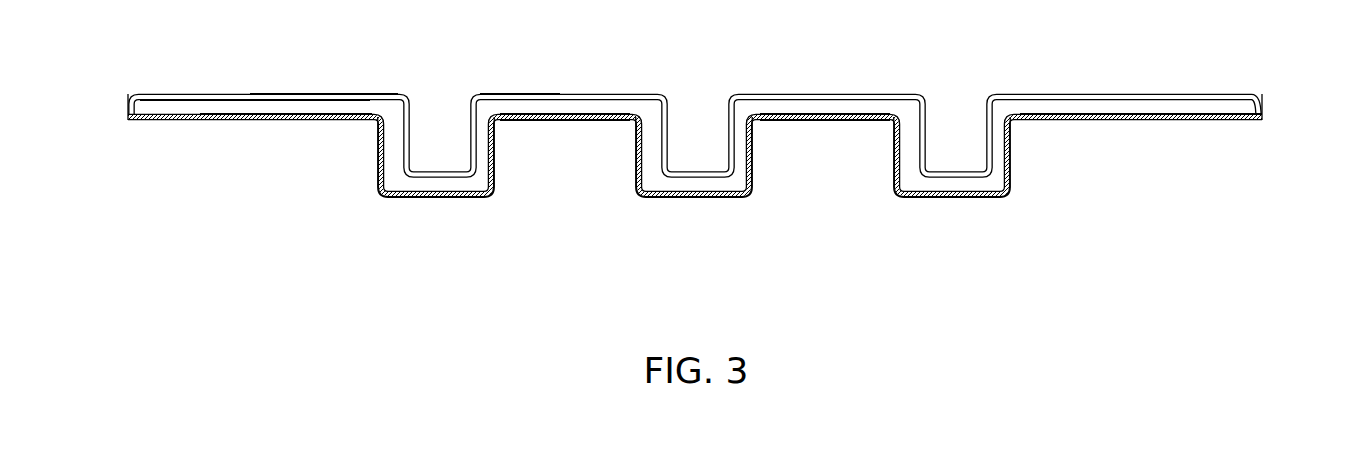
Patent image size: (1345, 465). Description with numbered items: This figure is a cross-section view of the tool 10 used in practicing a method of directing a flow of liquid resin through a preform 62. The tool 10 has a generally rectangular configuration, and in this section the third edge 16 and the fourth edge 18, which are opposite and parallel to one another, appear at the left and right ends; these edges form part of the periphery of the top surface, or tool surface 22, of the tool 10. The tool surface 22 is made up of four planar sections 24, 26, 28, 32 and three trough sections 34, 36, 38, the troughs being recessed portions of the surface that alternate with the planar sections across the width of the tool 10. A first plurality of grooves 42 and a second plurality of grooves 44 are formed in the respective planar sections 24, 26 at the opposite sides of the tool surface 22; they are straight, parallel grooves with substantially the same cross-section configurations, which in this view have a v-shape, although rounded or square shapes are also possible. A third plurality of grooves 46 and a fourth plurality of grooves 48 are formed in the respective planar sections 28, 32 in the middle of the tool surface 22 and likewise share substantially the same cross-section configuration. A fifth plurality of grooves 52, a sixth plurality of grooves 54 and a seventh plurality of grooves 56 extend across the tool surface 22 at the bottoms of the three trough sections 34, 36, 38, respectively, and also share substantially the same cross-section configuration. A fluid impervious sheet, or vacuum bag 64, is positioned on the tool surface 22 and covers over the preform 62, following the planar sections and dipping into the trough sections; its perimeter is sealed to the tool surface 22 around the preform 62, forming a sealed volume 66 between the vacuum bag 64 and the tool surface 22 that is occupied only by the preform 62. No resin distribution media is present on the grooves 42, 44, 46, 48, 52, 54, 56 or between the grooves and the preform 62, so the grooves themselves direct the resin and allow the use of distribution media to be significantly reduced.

The tool 10 is at (1138, 84).
The third edge 16 is at (128, 117).
The fourth edge 18 is at (1262, 117).
The tool surface 22 is at (177, 108).
The planar section 24 is at (328, 114).
The planar section 26 is at (1222, 115).
The planar section 28 is at (615, 114).
The planar section 32 is at (877, 114).
The trough section 34 is at (395, 190).
The trough section 36 is at (653, 188).
The trough section 38 is at (911, 188).
The first plurality of grooves 42 is at (243, 96).
The second plurality of grooves 44 is at (1121, 108).
The third plurality of grooves 46 is at (562, 108).
The fourth plurality of grooves 48 is at (820, 108).
The fifth plurality of grooves 52 is at (430, 187).
The sixth plurality of grooves 54 is at (688, 187).
The seventh plurality of grooves 56 is at (946, 187).
The preform 62 is at (290, 93).
The vacuum bag 64 is at (490, 89).
The sealed volume 66 is at (362, 94).